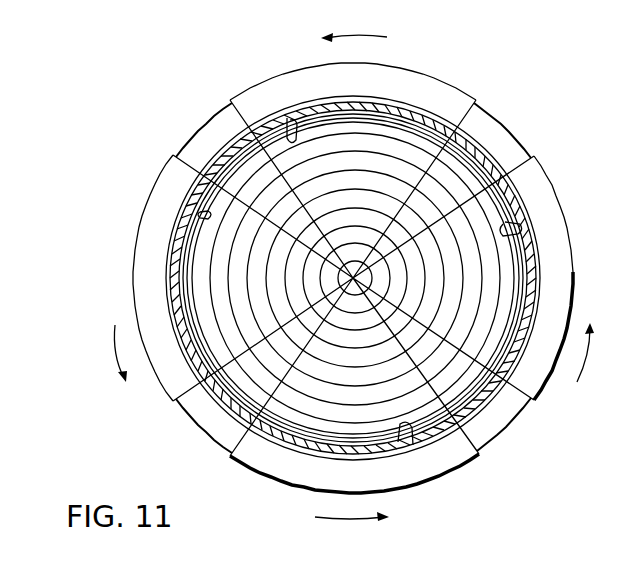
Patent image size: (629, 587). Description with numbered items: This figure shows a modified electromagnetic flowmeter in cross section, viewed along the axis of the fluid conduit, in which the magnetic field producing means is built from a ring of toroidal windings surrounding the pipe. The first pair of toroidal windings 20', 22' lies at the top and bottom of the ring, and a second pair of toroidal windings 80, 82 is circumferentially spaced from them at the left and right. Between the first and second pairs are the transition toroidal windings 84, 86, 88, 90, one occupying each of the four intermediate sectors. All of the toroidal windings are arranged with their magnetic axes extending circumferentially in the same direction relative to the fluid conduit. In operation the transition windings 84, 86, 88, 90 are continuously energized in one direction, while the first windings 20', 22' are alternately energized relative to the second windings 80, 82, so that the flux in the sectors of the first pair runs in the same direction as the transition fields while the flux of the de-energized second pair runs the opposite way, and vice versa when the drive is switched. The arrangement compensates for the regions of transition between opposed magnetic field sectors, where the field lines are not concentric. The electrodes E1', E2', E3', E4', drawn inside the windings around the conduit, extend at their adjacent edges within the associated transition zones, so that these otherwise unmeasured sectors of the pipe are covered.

The toroidal winding 80 is at (136, 268).
The toroidal winding 82 is at (562, 277).
The transition toroidal winding 84 is at (208, 140).
The transition toroidal winding 86 is at (500, 130).
The transition toroidal winding 88 is at (203, 415).
The transition toroidal winding 90 is at (502, 420).
The first toroidal winding 20' is at (353, 64).
The first toroidal winding 22' is at (354, 491).
The electrode E1' is at (270, 85).
The electrode E2' is at (425, 478).
The electrode E3' is at (150, 188).
The electrode E4' is at (563, 208).